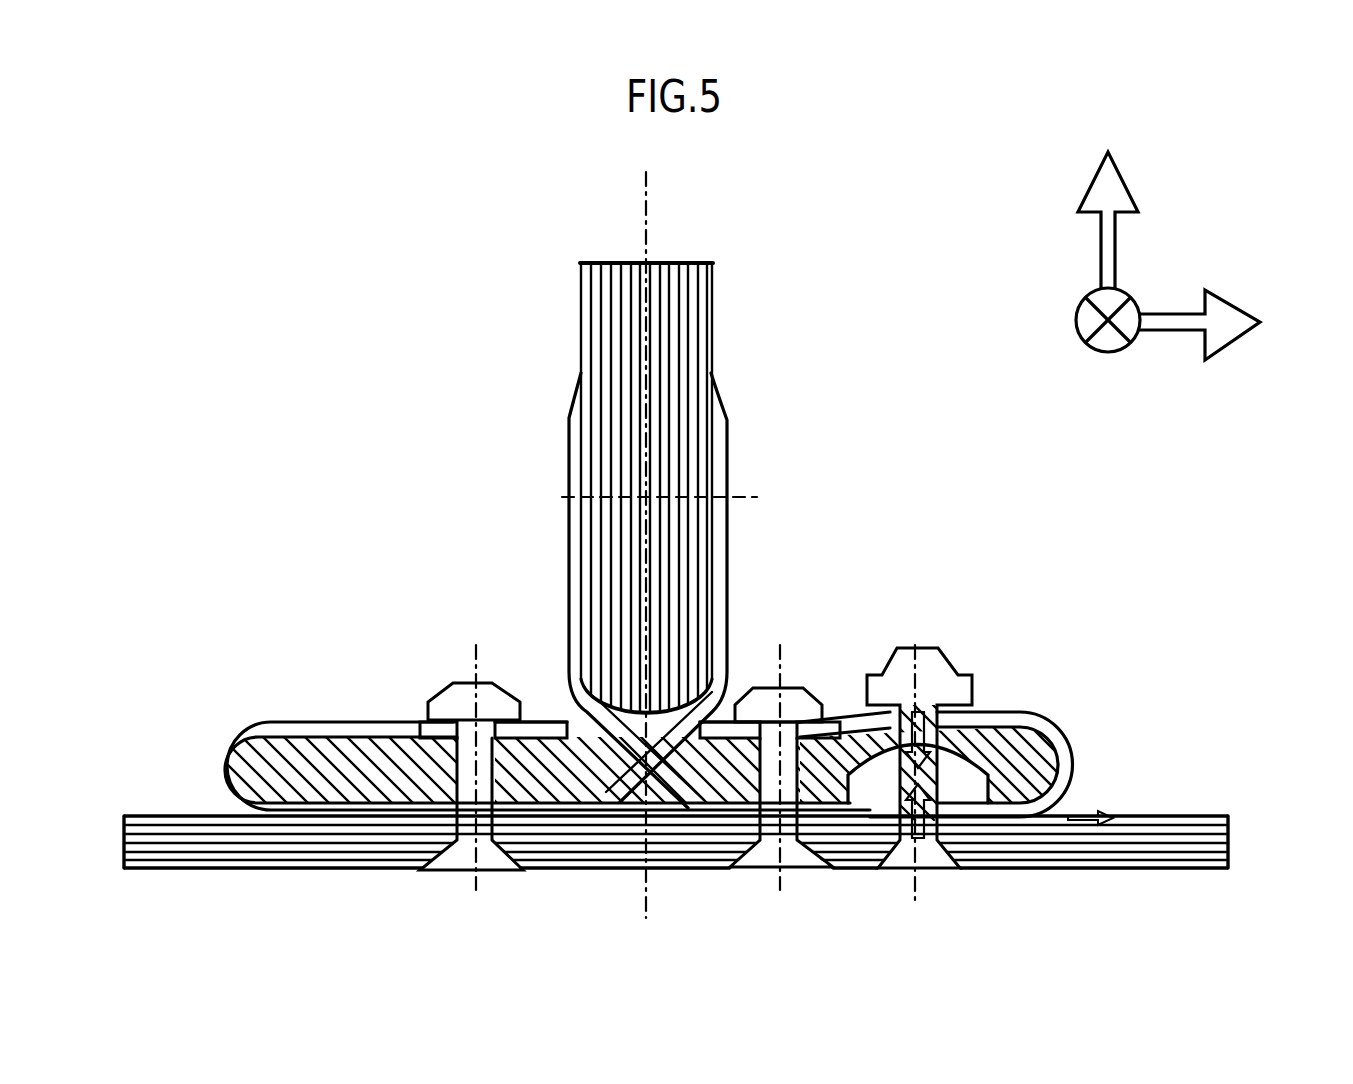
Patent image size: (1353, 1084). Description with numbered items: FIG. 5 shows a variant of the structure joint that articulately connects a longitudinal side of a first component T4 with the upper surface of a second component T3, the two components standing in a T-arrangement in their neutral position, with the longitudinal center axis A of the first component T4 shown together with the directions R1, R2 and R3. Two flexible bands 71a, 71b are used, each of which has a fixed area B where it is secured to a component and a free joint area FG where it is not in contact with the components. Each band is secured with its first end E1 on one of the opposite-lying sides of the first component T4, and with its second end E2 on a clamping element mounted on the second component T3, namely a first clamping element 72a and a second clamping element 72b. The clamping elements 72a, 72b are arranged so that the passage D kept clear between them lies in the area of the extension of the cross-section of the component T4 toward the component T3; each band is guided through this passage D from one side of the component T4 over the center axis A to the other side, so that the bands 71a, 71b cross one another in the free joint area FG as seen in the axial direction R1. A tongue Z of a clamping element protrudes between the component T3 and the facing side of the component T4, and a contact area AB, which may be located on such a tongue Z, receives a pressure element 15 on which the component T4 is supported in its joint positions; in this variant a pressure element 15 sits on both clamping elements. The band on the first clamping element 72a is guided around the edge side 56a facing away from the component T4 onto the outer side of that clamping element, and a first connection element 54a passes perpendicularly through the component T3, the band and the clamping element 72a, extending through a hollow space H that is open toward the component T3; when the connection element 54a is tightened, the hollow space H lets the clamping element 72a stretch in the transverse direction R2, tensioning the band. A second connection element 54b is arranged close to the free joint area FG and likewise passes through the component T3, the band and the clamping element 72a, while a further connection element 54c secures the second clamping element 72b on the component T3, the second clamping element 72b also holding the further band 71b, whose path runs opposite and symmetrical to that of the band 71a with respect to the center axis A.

The longitudinal center axis A is at (660, 529).
The first end of band E1 is at (736, 406).
The first component T4 is at (681, 262).
The band 71a is at (573, 449).
The further flexible band 71b is at (718, 482).
The fixed area B is at (553, 527).
The free joint area FG is at (554, 674).
The rim or edge side 56a is at (719, 786).
The second clamping element 72b is at (380, 737).
The first clamping element 72a is at (992, 746).
The hollow space H is at (962, 792).
The further connection element 54c is at (466, 870).
The second connection element 54b is at (793, 870).
The first connection element 54a is at (932, 870).
The second component T3 is at (1222, 846).
The pressure element 15 is at (725, 720).
The second end of band E2 is at (764, 712).
The contact area AB is at (590, 765).
The passage D is at (637, 770).
The tongue Z is at (665, 915).
The axial direction R1 is at (1085, 329).
The axial direction R2 is at (1229, 325).
The third direction R3 is at (1080, 220).